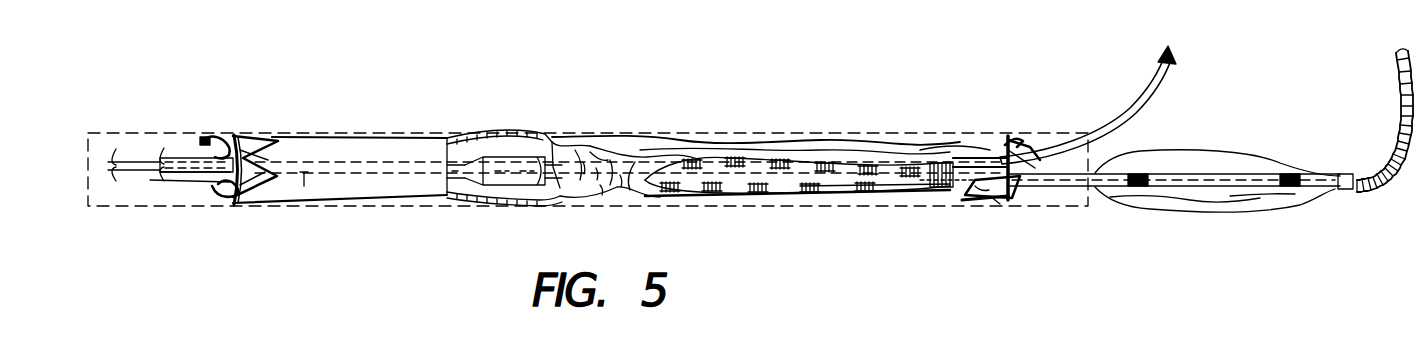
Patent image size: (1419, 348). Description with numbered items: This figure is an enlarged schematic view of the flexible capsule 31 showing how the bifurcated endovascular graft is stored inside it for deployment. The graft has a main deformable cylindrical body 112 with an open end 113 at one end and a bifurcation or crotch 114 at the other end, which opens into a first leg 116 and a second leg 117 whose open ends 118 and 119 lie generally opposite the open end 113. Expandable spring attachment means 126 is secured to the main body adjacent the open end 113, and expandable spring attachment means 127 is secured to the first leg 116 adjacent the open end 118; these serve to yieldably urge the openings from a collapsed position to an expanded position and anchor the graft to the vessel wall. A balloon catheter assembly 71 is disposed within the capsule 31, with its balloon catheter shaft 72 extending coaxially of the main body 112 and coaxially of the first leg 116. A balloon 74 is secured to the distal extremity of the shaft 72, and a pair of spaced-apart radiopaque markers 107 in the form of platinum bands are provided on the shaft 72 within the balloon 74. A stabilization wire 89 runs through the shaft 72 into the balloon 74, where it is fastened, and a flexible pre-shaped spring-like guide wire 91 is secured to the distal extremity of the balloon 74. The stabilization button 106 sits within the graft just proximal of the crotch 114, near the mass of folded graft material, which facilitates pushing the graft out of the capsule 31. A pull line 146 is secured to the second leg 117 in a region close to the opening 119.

The flexible capsule 31 is at (359, 130).
The balloon catheter assembly 71 is at (190, 180).
The balloon catheter shaft 72 is at (180, 182).
The balloon 74 is at (1168, 166).
The stabilization wire 89 is at (148, 162).
The guide wire 91 is at (1400, 100).
The stabilization button 106 is at (512, 182).
The radiopaque markers 107 is at (1134, 188).
The main deformable cylindrical body 112 is at (856, 138).
The open end 113 is at (1015, 146).
The bifurcation or crotch 114 is at (594, 150).
The first leg 116 is at (280, 136).
The second leg 117 is at (774, 158).
The open end of first leg 118 is at (201, 145).
The open end of second leg 119 is at (968, 168).
The expandable spring attachment means 126 is at (981, 198).
The expandable spring attachment means 127 is at (250, 136).
The pull line 146 is at (1130, 106).